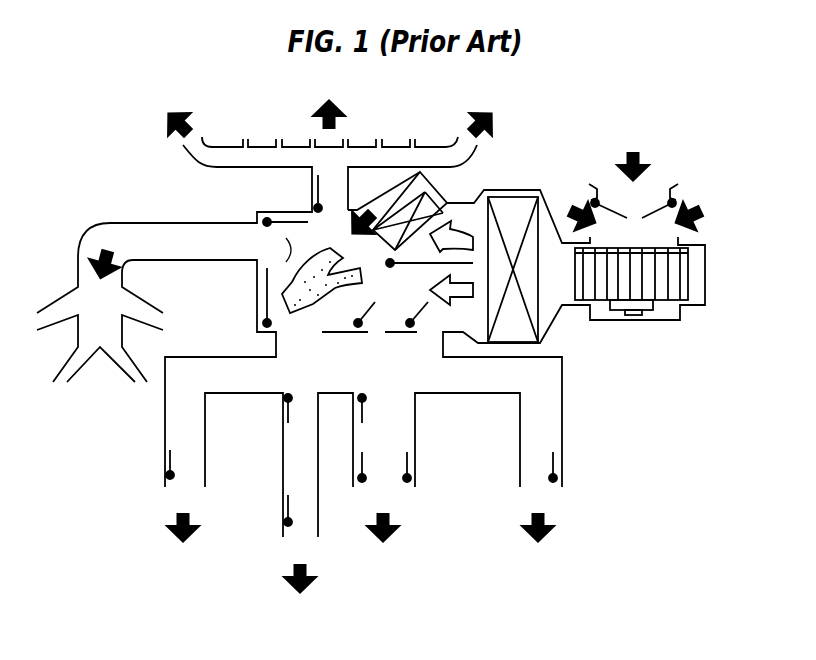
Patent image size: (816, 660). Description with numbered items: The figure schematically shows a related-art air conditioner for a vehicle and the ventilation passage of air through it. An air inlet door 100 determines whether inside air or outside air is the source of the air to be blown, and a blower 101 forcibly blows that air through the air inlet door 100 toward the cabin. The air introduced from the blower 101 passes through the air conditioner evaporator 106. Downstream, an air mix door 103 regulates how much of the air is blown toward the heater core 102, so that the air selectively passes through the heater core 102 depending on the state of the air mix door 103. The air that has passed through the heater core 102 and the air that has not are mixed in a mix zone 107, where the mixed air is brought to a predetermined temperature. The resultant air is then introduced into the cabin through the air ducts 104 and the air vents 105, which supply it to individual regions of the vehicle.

The air inlet door 100 is at (653, 210).
The blower 101 is at (683, 265).
The heater core 102 is at (428, 205).
The air mix door 103 is at (415, 268).
The air ducts 104 is at (283, 457).
The air vents 105 is at (302, 520).
The air conditioner evaporator 106 is at (533, 302).
The mix zone 107 is at (287, 250).